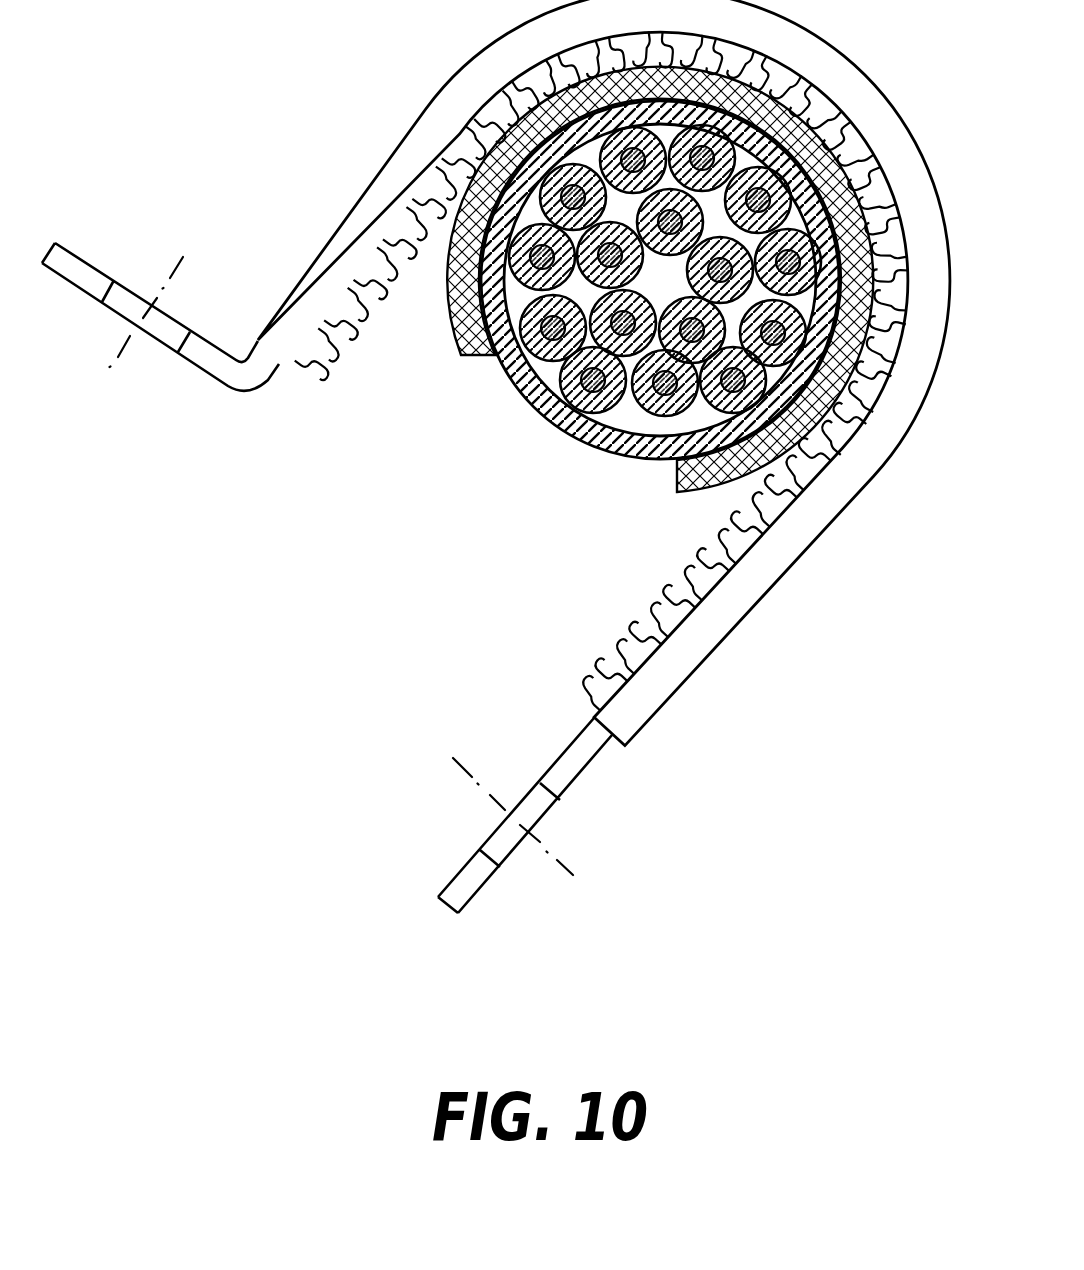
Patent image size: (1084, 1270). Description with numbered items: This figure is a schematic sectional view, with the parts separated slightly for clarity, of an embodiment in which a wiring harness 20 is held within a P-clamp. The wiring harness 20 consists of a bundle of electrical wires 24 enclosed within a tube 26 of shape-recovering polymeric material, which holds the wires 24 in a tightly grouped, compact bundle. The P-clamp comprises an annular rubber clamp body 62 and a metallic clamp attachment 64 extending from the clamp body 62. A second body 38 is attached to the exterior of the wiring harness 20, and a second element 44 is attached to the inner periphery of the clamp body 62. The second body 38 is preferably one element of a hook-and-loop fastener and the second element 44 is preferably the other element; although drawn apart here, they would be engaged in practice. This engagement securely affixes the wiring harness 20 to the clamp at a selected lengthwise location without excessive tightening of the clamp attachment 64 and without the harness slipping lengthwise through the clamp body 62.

The wiring harness 20 is at (626, 326).
The electrical wires 24 is at (648, 424).
The tube 26 is at (553, 425).
The second body 38 is at (450, 317).
The second element 44 is at (617, 653).
The clamp body 62 is at (352, 237).
The clamp attachment 64 is at (75, 243).